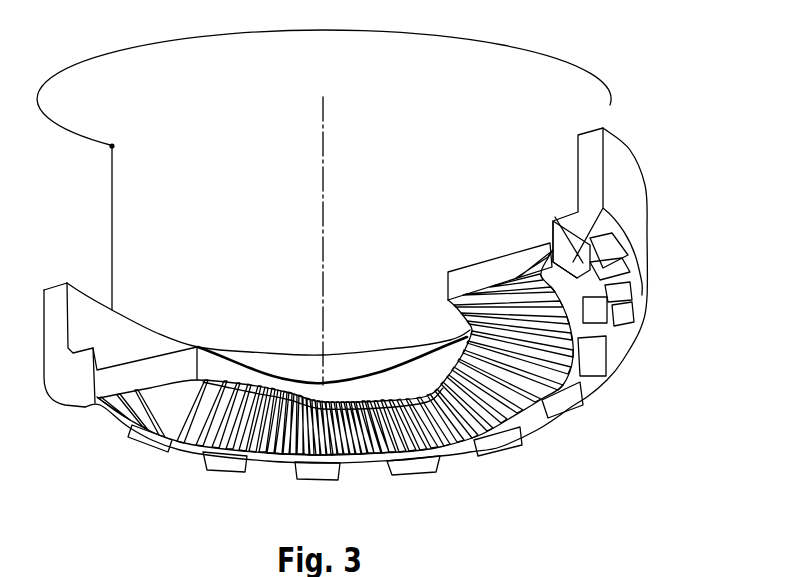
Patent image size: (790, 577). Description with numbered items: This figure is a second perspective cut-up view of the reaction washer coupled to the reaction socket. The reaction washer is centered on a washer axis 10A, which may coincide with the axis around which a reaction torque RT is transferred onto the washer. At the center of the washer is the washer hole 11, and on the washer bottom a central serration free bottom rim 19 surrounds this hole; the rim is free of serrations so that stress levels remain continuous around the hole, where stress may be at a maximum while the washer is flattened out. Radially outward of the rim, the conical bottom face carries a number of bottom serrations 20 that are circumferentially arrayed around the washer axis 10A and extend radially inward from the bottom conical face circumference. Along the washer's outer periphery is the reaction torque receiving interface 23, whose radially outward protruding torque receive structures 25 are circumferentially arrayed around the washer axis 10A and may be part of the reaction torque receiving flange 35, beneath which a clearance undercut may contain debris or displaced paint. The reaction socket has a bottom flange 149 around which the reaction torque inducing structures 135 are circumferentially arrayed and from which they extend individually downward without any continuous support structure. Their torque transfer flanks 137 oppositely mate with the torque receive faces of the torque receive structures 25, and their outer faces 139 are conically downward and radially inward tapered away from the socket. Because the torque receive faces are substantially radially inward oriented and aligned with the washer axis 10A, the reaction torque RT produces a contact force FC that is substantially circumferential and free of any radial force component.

The washer axis 10A is at (326, 117).
The reaction torque RT is at (592, 125).
The washer hole 11 is at (418, 373).
The central serration free bottom rim 19 is at (223, 395).
The bottom serrations 20 is at (510, 363).
The reaction torque receiving interface 23 is at (460, 465).
The torque receive structures 25 is at (597, 330).
The reaction torque receiving flange 35 is at (497, 262).
The contact force FC is at (568, 265).
The bottom flange 149 is at (607, 255).
The torque transfer flanks 137 is at (605, 280).
The outer faces 139 is at (620, 296).
The reaction torque inducing structures 135 is at (628, 312).